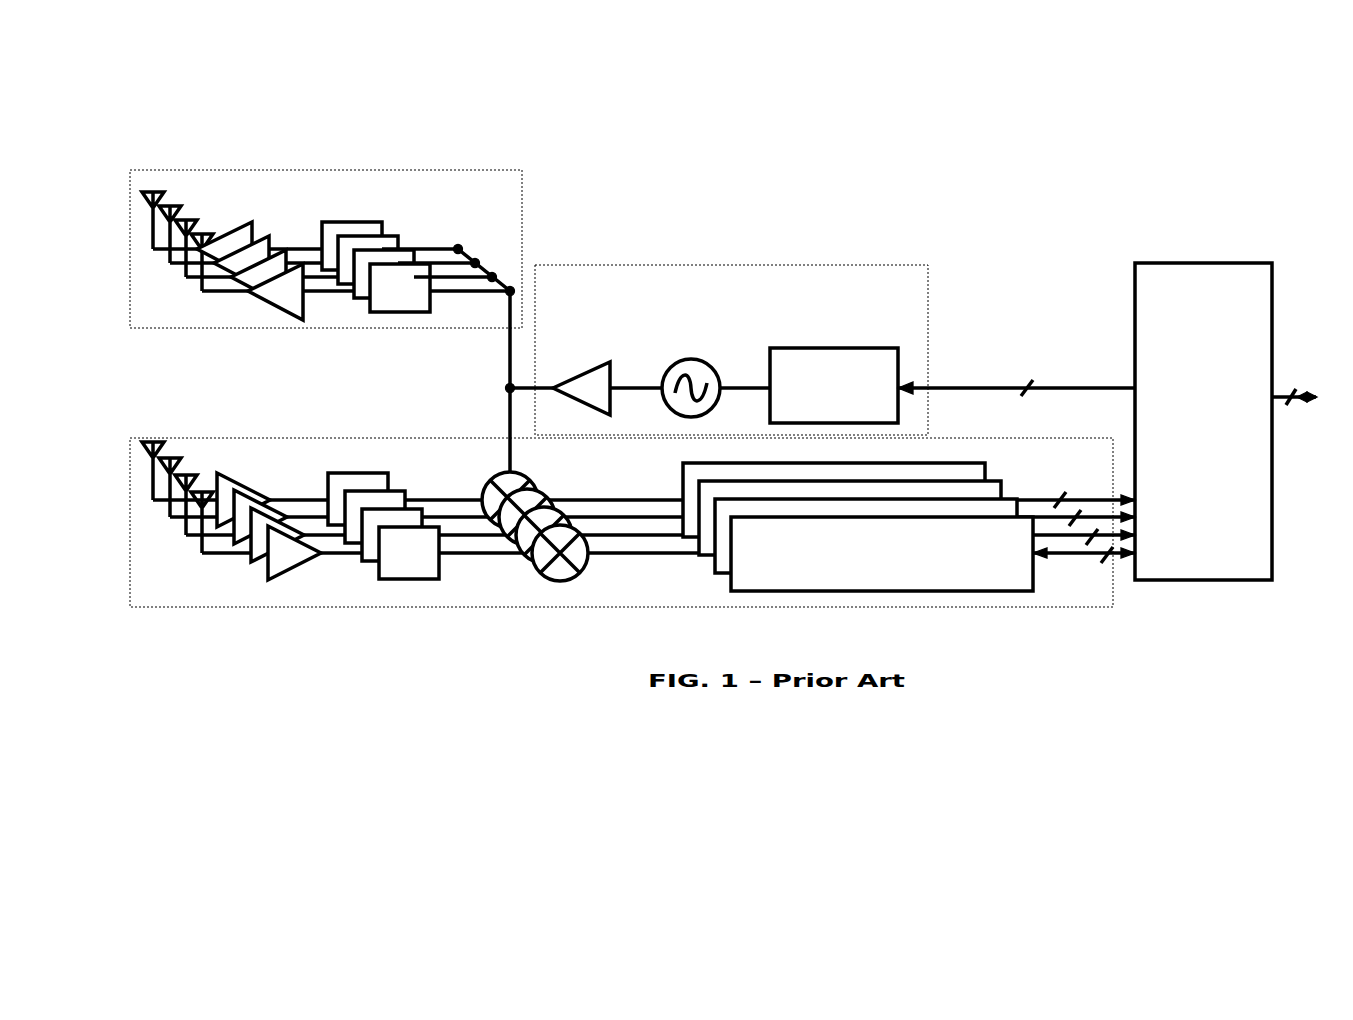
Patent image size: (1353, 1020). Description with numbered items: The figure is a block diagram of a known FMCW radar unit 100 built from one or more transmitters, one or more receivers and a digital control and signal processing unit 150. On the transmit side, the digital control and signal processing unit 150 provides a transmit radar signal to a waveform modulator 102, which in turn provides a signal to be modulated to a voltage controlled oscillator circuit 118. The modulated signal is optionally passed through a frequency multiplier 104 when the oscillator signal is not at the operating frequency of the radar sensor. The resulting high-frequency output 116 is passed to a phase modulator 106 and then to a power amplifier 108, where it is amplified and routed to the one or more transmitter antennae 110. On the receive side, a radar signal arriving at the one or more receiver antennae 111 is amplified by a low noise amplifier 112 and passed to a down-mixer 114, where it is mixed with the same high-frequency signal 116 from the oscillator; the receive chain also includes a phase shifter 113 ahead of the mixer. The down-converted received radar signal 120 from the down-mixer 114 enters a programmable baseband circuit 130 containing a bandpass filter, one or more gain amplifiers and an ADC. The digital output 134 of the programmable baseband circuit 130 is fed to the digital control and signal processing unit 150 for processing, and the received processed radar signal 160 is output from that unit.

The FMCW radar unit 100 is at (179, 108).
The waveform modulator 102 is at (873, 348).
The frequency multiplier 104 is at (612, 393).
The phase modulator 106 is at (385, 316).
The power amplifier 108 is at (258, 226).
The transmitter antenna 110 is at (152, 190).
The receiver antenna 111 is at (152, 438).
The low noise amplifier 112 is at (277, 568).
The receive phase shifters 113 is at (420, 579).
The down-mixer 114 is at (558, 579).
The high-frequency output 116 is at (508, 386).
The voltage controlled oscillator circuit 118 is at (686, 360).
The down-converted received radar signal 120 is at (667, 500).
The programmable baseband circuit 130 is at (985, 466).
The digital output 134 is at (1100, 496).
The digital control and signal processing unit 150 is at (1220, 262).
The received processed radar signal 160 is at (1300, 404).